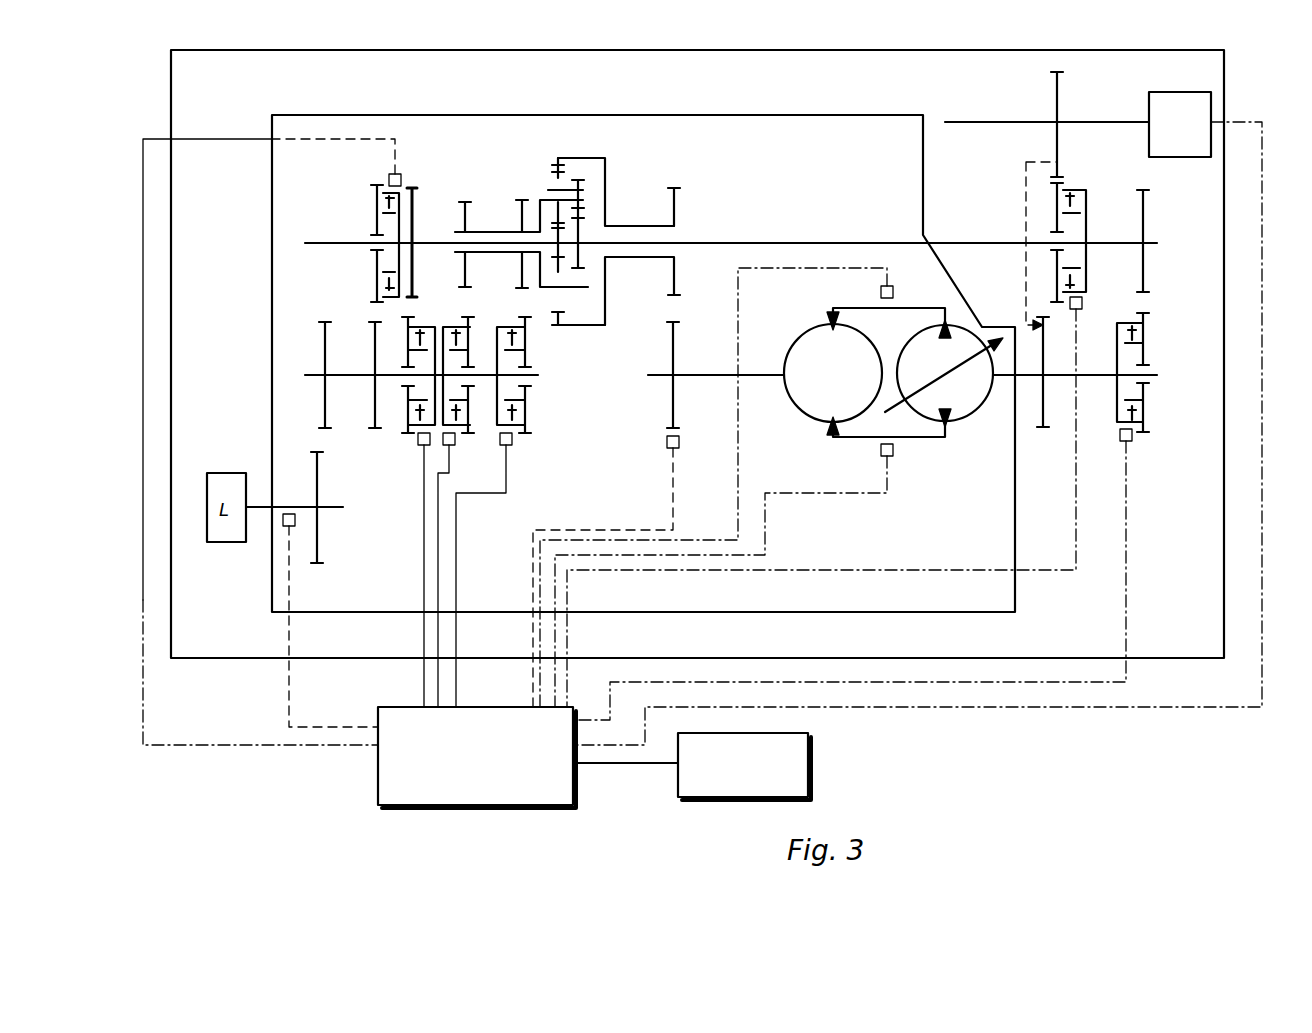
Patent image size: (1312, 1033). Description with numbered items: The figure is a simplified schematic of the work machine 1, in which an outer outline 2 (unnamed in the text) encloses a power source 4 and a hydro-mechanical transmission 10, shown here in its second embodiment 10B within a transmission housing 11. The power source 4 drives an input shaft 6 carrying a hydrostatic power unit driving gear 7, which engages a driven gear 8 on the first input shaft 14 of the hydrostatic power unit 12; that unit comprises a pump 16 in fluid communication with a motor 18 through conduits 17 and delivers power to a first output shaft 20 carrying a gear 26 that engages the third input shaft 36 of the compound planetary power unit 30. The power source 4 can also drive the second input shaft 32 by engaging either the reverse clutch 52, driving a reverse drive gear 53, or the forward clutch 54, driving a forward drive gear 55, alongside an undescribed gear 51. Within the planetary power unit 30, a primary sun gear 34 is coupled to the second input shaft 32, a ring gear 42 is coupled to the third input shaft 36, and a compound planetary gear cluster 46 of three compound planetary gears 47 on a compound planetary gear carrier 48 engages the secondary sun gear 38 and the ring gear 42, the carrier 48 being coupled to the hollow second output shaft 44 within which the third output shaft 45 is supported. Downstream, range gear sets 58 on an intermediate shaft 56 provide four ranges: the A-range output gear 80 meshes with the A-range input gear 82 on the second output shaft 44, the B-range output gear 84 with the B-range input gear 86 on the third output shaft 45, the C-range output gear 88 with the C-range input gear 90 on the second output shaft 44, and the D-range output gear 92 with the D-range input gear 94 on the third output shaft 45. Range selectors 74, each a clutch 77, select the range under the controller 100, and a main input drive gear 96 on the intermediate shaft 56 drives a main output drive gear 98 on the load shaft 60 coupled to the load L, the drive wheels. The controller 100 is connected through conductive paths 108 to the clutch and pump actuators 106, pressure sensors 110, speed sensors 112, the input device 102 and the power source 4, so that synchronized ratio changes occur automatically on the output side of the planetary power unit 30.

The machine 1 is at (1224, 76).
The drive train 2 is at (890, 663).
The power source 4 is at (1183, 158).
The input shaft 6 is at (1120, 122).
The hydrostatic power unit driving gear 7 is at (1060, 92).
The driven gear 8 is at (1045, 428).
The transmission 10 is at (672, 624).
The hydro-mechanical transmission 10B is at (870, 113).
The transmission housing 11 is at (742, 113).
The hydrostatic power unit 12 is at (848, 465).
The first input shaft 14 is at (1003, 378).
The pump 16 is at (960, 422).
The conduits 17 is at (905, 306).
The motor 18 is at (793, 400).
The first output shaft 20 is at (712, 378).
The gear 26 is at (678, 350).
The planetary power unit 30 is at (590, 338).
The second input shaft 32 is at (785, 243).
The primary sun gear 34 is at (580, 257).
The third input shaft 36 is at (648, 226).
The secondary sun gear 38 is at (563, 287).
The ring gear 42 is at (585, 158).
The second output shaft 44 is at (465, 232).
The third output shaft 45 is at (414, 240).
The compound planetary gear cluster 46 is at (540, 177).
The compound planetary gears 47 is at (556, 176).
The compound planetary gear carrier 48 is at (540, 232).
The gear 51 is at (1146, 265).
The reverse clutch 52 is at (1088, 203).
The reverse drive gear 53 is at (1055, 288).
The forward clutch 54 is at (1115, 415).
The forward drive gear 55 is at (1147, 410).
The intermediate shaft 56 is at (540, 378).
The range gear sets 58 is at (372, 218).
The load shaft 60 is at (335, 510).
The range selectors 74 is at (408, 162).
The clutch 77 is at (382, 200).
The A-range output gear 80 is at (527, 412).
The A-range input gear 82 is at (522, 268).
The B-range output gear 84 is at (410, 430).
The B-range input gear 86 is at (415, 318).
The C-range output gear 88 is at (470, 336).
The C-range input gear 90 is at (463, 268).
The D-range output gear 92 is at (372, 405).
The D-range input gear 94 is at (380, 275).
The main input drive gear 96 is at (322, 335).
The main output drive gear 98 is at (315, 555).
The controller 100 is at (459, 805).
The input device 102 is at (714, 797).
The actuators 106 is at (393, 174).
The conductive paths 108 is at (422, 690).
The pressure sensors 110 is at (880, 292).
The speed sensors 112 is at (667, 445).